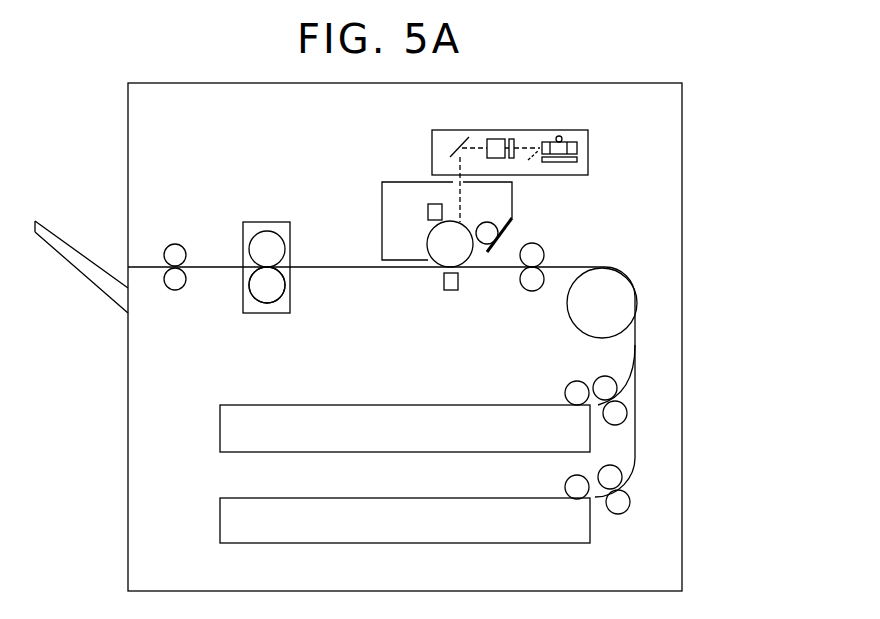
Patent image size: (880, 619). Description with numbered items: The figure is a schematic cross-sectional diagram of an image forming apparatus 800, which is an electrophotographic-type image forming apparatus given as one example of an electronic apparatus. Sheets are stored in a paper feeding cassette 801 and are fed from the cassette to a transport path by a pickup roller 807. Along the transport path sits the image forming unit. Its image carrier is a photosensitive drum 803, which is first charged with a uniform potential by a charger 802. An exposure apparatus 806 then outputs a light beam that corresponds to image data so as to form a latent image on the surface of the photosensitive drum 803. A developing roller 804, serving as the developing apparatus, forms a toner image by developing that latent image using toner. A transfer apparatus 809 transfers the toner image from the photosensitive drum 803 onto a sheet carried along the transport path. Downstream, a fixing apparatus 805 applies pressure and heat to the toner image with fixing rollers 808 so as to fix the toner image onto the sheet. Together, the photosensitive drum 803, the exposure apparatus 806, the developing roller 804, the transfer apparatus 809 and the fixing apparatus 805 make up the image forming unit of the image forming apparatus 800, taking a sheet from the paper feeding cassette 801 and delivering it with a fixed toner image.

The image forming apparatus 800 is at (682, 168).
The paper feeding cassette 801 is at (413, 405).
The charger 802 is at (433, 204).
The photosensitive drum 803 is at (466, 261).
The developing roller 804 is at (512, 214).
The fixing apparatus 805 is at (267, 222).
The exposure apparatus 806 is at (588, 150).
The pickup roller 807 is at (576, 382).
The fixing rollers 808 is at (290, 282).
The transfer apparatus 809 is at (451, 290).